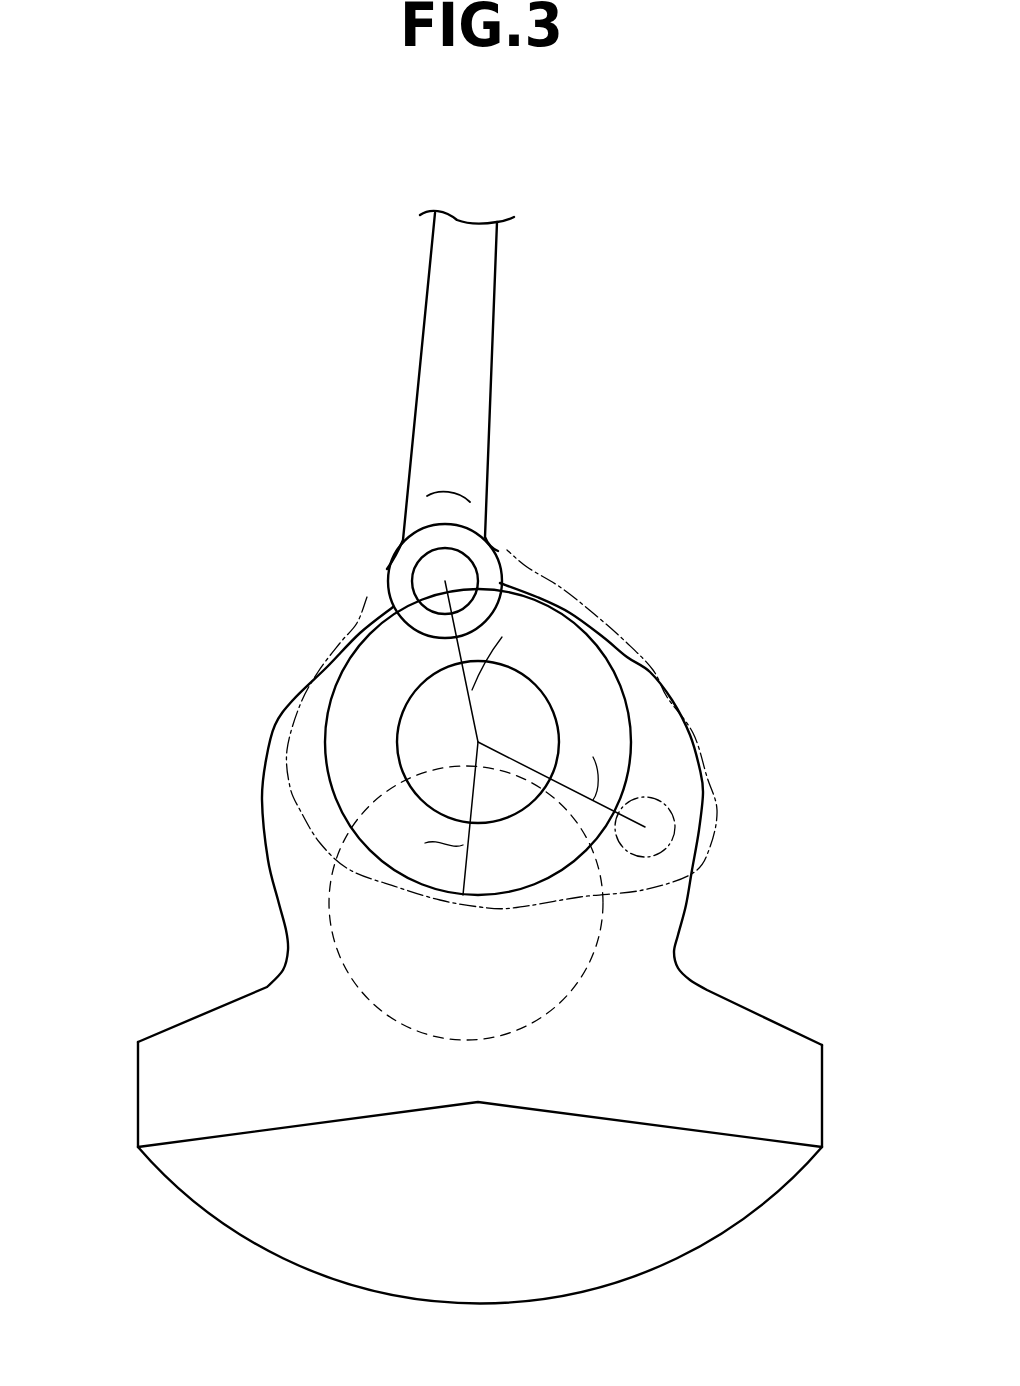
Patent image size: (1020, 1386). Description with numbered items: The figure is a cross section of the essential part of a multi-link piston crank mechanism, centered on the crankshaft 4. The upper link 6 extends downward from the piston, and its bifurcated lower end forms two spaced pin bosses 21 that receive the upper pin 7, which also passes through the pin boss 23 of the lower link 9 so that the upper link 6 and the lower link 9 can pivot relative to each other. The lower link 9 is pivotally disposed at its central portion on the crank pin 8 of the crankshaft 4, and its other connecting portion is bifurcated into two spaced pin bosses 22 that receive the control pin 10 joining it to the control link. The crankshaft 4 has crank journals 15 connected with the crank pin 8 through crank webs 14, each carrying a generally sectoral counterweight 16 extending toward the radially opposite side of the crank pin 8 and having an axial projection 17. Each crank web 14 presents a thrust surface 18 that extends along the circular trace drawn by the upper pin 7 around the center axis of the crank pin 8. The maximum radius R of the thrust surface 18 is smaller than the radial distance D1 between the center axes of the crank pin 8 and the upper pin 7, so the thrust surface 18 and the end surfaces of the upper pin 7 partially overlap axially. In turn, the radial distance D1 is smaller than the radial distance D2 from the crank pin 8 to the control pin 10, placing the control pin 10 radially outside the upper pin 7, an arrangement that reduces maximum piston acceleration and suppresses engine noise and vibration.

The crankshaft 4 is at (790, 977).
The upper link 6 is at (442, 325).
The upper pin 7 is at (437, 570).
The crank pin 8 is at (448, 723).
The lower link 9 is at (717, 817).
The control pin 10 is at (660, 810).
The crank web 14 is at (283, 845).
The crank journal 15 is at (337, 947).
The counterweight 16 is at (770, 1073).
The axial projection 17 is at (670, 1222).
The thrust surface 18 is at (573, 663).
The pin boss 21 is at (392, 572).
The pin boss 22 is at (710, 843).
The pin boss 23 is at (533, 563).
The radial distance D1 is at (514, 654).
The radial distance D2 is at (589, 758).
The maximum radius R is at (433, 818).